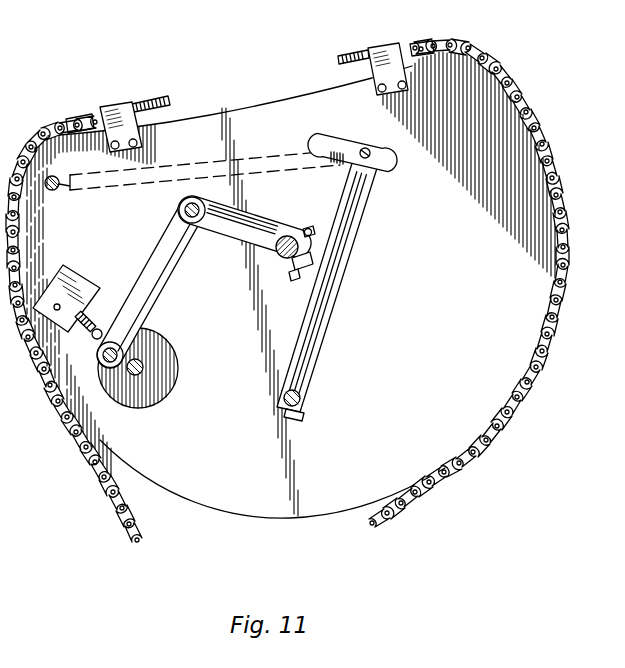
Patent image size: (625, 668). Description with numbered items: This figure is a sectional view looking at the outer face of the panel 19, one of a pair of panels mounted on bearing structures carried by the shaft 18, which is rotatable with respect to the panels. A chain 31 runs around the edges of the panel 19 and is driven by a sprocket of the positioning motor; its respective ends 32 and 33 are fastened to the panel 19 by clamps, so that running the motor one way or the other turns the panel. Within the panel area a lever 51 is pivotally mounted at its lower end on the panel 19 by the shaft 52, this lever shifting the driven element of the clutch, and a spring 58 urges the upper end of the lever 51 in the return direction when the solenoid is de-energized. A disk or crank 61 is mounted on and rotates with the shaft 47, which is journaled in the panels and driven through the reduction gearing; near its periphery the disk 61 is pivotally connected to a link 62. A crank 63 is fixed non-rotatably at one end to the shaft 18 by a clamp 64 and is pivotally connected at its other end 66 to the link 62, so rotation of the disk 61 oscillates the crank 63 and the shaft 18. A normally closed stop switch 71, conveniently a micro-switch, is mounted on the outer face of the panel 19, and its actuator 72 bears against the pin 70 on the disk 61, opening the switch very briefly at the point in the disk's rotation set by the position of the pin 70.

The shaft 18 is at (277, 252).
The panel 19 is at (233, 506).
The chain 31 is at (107, 497).
The chain end 32 is at (350, 62).
The chain end 33 is at (160, 103).
The shaft 47 is at (143, 373).
The lever 51 is at (343, 267).
The shaft 52 is at (297, 397).
The spring 58 is at (243, 160).
The disk or crank 61 is at (178, 377).
The link 62 is at (165, 255).
The crank 63 is at (240, 237).
The clamp 64 is at (298, 230).
The crank end 66 is at (183, 210).
The pin 70 is at (104, 343).
The stop switch 71 is at (88, 288).
The actuator 72 is at (90, 347).